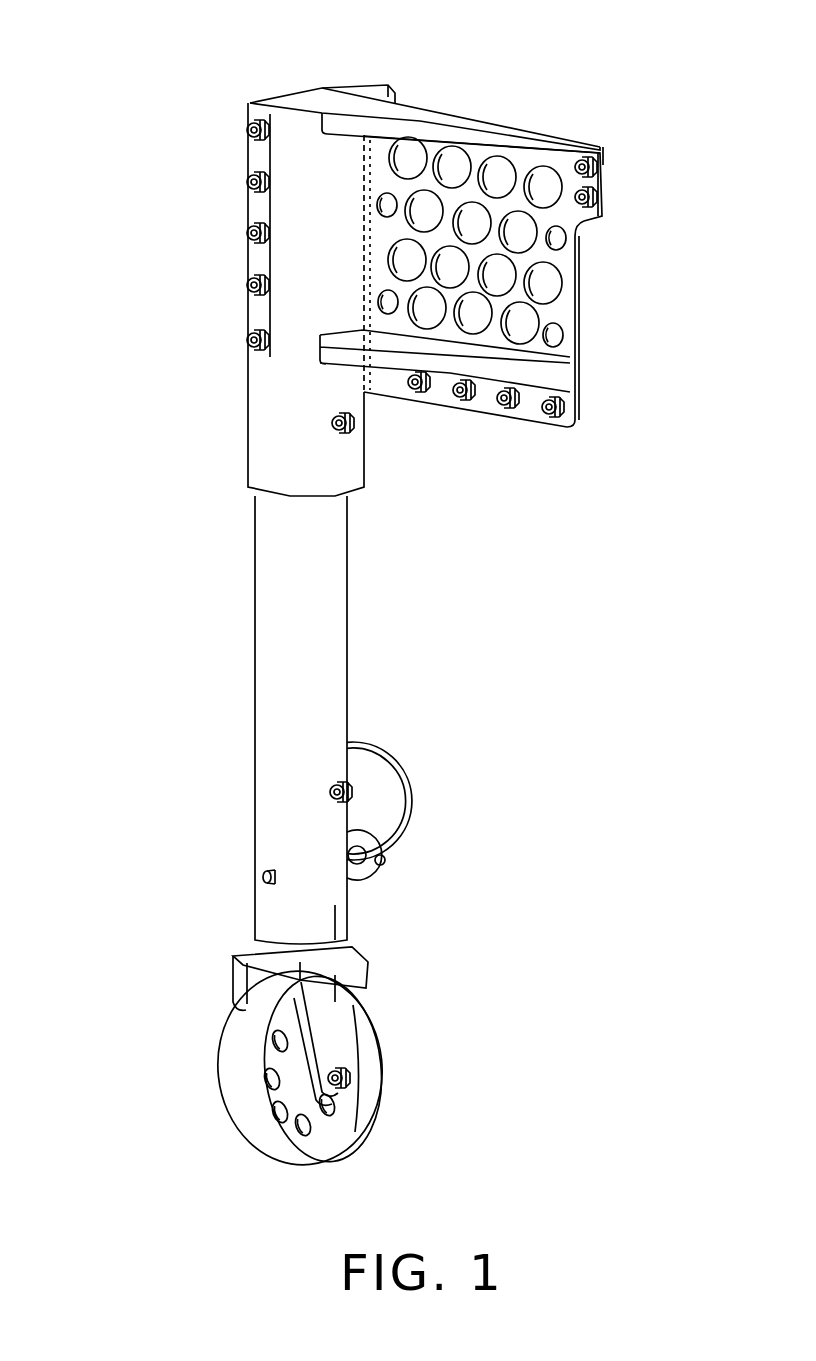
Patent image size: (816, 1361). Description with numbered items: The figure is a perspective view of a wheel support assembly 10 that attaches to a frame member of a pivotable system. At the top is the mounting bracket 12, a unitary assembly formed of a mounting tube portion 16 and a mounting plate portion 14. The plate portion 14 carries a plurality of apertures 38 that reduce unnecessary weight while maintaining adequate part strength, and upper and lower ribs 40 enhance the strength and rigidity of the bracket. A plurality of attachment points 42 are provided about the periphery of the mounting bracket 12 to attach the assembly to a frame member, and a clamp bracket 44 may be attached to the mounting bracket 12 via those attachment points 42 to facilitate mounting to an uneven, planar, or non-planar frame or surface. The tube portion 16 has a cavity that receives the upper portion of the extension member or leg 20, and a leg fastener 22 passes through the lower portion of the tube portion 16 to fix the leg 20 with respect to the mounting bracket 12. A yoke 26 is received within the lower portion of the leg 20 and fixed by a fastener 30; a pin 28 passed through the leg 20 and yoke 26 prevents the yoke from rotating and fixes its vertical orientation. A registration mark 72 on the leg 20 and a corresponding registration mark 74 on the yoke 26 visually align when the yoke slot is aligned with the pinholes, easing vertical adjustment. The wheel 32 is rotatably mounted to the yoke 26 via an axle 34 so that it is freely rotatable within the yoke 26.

The wheel support assembly 10 is at (112, 576).
The mounting bracket 12 is at (448, 116).
The mounting plate portion 14 is at (557, 317).
The mounting tube portion 16 is at (262, 434).
The leg 20 is at (340, 630).
The leg fastener 22 is at (350, 430).
The yoke 26 is at (355, 963).
The pin 28 is at (384, 862).
The fastener 30 is at (348, 793).
The wheel 32 is at (375, 1070).
The axle 34 is at (350, 1085).
The apertures 38 is at (518, 223).
The ribs 40 is at (350, 125).
The attachment points 42 is at (247, 234).
The clamp bracket 44 is at (346, 90).
The registration mark 72 is at (336, 920).
The registration mark 74 is at (336, 993).